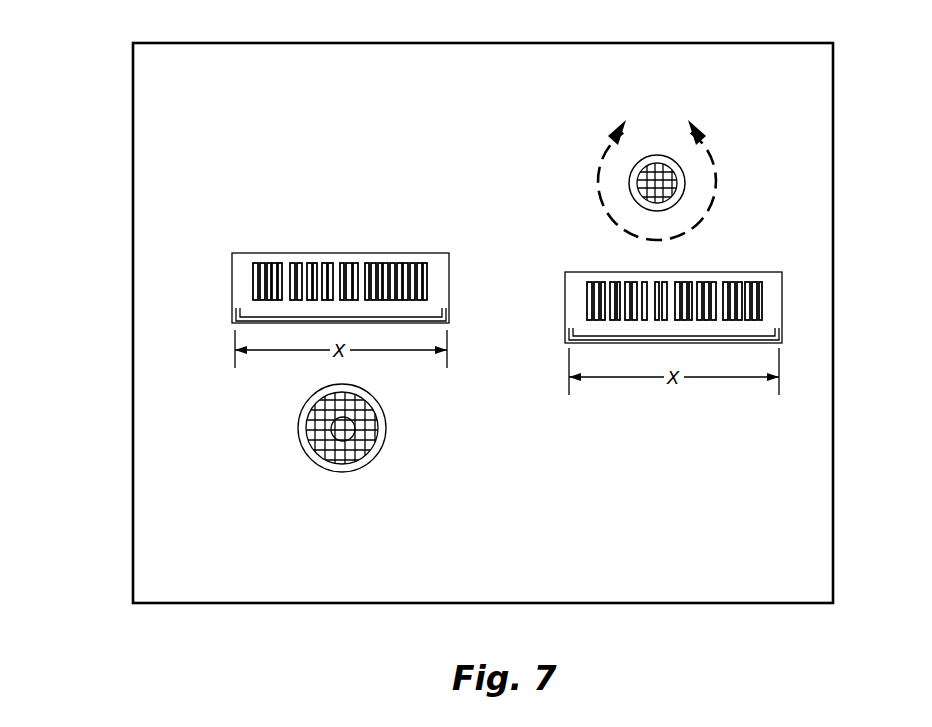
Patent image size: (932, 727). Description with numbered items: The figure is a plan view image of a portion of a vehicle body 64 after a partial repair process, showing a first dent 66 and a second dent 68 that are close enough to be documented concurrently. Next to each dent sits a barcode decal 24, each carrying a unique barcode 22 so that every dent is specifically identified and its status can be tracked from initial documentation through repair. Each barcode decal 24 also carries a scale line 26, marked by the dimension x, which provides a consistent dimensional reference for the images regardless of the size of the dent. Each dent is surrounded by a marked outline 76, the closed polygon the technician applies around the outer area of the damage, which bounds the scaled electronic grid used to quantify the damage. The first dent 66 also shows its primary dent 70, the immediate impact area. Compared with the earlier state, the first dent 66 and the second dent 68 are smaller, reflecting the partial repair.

The barcode 22 is at (240, 274).
The barcode decal 24 is at (237, 295).
The scale line 26 is at (237, 327).
The vehicle body 64 is at (740, 583).
The first dent 66 is at (318, 480).
The second dent 68 is at (700, 165).
The primary dent 70 is at (350, 440).
The marked outline 76 is at (677, 195).